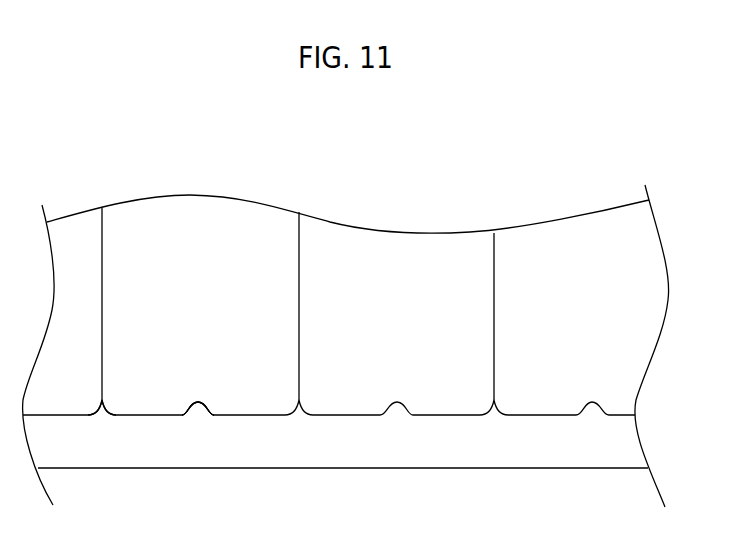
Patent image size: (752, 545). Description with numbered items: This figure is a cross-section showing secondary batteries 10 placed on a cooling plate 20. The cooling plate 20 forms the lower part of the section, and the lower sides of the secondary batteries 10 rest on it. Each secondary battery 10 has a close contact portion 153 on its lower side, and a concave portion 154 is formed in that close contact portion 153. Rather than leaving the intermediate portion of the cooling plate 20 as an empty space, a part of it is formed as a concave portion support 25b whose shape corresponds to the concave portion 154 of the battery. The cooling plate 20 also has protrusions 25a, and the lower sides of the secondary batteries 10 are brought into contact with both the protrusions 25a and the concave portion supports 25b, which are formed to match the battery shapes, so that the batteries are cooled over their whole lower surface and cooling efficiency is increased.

The secondary battery 10 is at (555, 257).
The cooling plate 20 is at (558, 470).
The close contact portion 153 is at (250, 413).
The concave portion 154 is at (197, 400).
The protrusion 25a is at (105, 405).
The concave portion support 25b is at (199, 405).